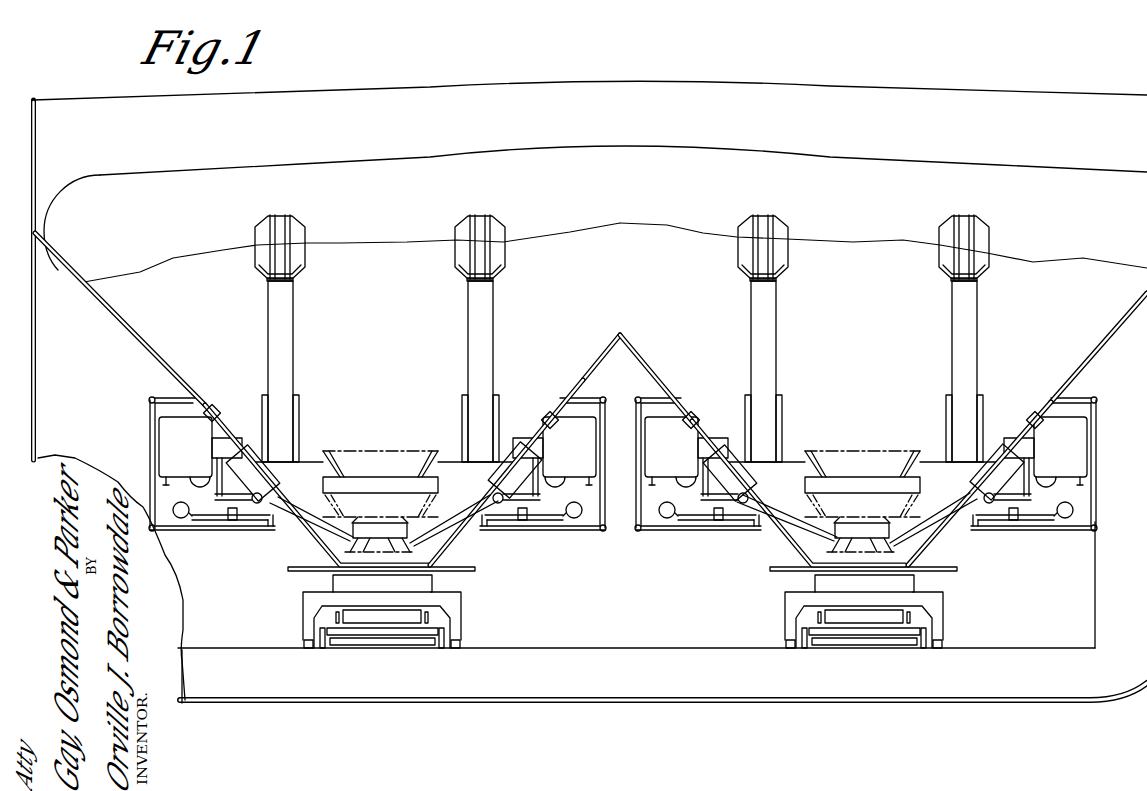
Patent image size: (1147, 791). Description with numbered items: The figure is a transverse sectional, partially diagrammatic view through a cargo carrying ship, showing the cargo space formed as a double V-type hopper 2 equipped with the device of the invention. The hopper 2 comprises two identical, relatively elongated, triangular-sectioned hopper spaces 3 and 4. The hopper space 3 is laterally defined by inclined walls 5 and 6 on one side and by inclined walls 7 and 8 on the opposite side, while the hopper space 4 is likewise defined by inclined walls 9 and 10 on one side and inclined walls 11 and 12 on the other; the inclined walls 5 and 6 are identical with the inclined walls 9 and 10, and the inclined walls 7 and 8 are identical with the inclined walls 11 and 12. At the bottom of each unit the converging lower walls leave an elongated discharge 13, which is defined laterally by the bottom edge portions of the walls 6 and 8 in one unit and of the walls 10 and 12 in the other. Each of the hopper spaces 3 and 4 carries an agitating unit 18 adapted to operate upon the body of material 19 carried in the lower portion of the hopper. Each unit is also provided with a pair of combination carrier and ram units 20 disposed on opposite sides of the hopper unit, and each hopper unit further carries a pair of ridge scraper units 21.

The hopper 2 is at (937, 181).
The hopper space 3 is at (386, 376).
The hopper space 4 is at (883, 349).
The inclined wall 5 is at (180, 386).
The inclined wall 6 is at (310, 537).
The inclined wall 7 is at (538, 422).
The inclined wall 8 is at (447, 538).
The inclined wall 9 is at (1046, 395).
The inclined wall 10 is at (940, 537).
The inclined wall 11 is at (683, 396).
The inclined wall 12 is at (787, 540).
The elongated discharge 13 is at (342, 546).
The agitating unit 18 is at (386, 446).
The material 19 is at (657, 157).
The combination carrier and ram unit 20 is at (220, 418).
The ridge scraper unit 21 is at (295, 326).